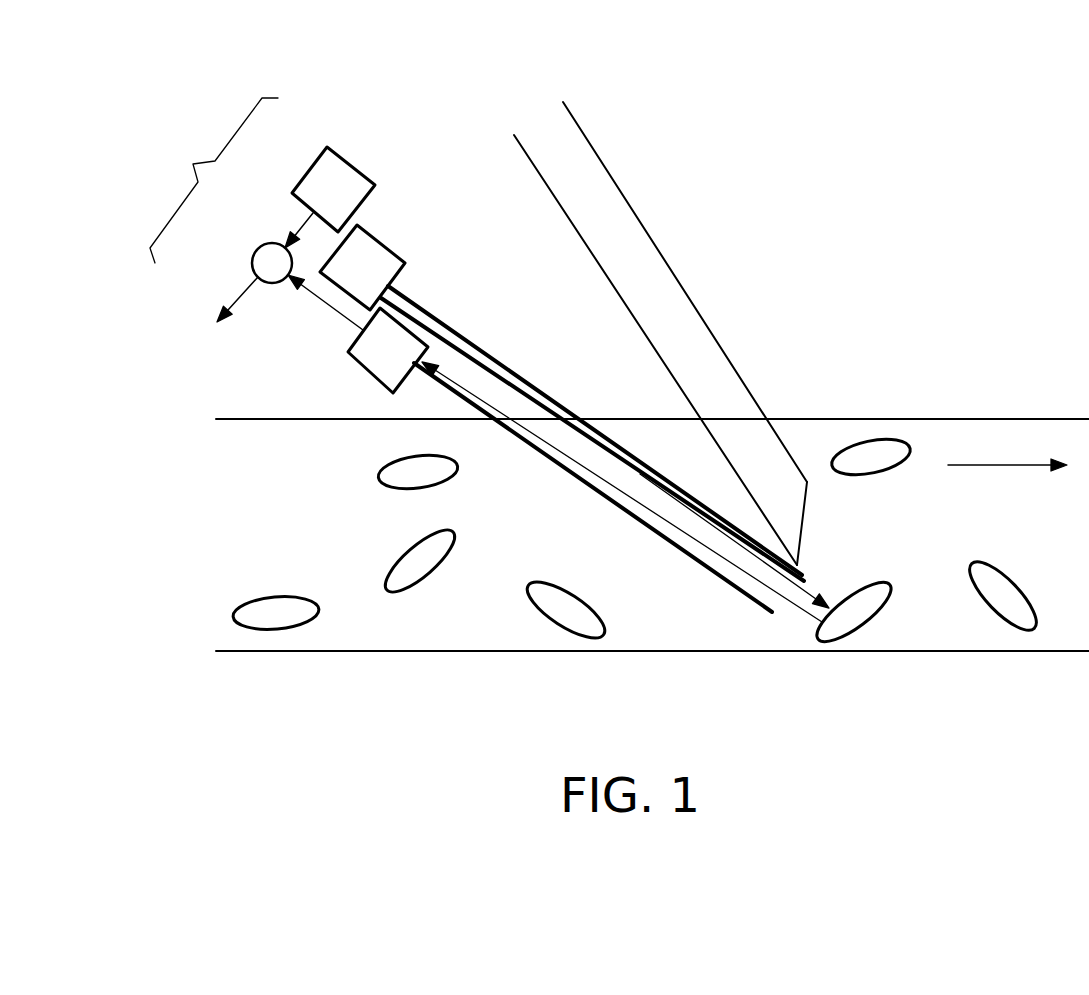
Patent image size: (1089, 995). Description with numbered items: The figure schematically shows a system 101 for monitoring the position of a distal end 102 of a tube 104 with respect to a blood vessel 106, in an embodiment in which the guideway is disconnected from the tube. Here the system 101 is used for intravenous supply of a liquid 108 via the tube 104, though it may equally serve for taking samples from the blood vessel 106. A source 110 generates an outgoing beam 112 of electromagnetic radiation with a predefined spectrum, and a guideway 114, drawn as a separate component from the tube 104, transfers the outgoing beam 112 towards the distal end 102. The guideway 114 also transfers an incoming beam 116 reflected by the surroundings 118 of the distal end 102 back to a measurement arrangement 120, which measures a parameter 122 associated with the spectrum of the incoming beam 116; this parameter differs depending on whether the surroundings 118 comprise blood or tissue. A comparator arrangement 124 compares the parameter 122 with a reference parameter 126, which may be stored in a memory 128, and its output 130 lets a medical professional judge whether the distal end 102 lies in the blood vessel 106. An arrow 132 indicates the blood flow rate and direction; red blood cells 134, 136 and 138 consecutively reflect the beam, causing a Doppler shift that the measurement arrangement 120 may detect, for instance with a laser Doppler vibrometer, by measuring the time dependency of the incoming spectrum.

The system 101 is at (213, 180).
The distal end 102 is at (802, 532).
The tube 104 is at (598, 192).
The blood vessel 106 is at (830, 419).
The liquid 108 is at (760, 500).
The source 110 is at (342, 277).
The outgoing beam 112 is at (653, 487).
The guideway 114 is at (707, 572).
The incoming beam 116 is at (538, 440).
The surroundings 118 is at (817, 580).
The measurement arrangement 120 is at (366, 361).
The parameter 122 is at (323, 307).
The comparator arrangement 124 is at (256, 254).
The reference parameter 126 is at (300, 229).
The memory 128 is at (313, 198).
The output 130 is at (236, 298).
The arrow 132 is at (1007, 491).
The red blood cell 134 is at (833, 628).
The red blood cell 136 is at (570, 622).
The red blood cell 138 is at (278, 620).